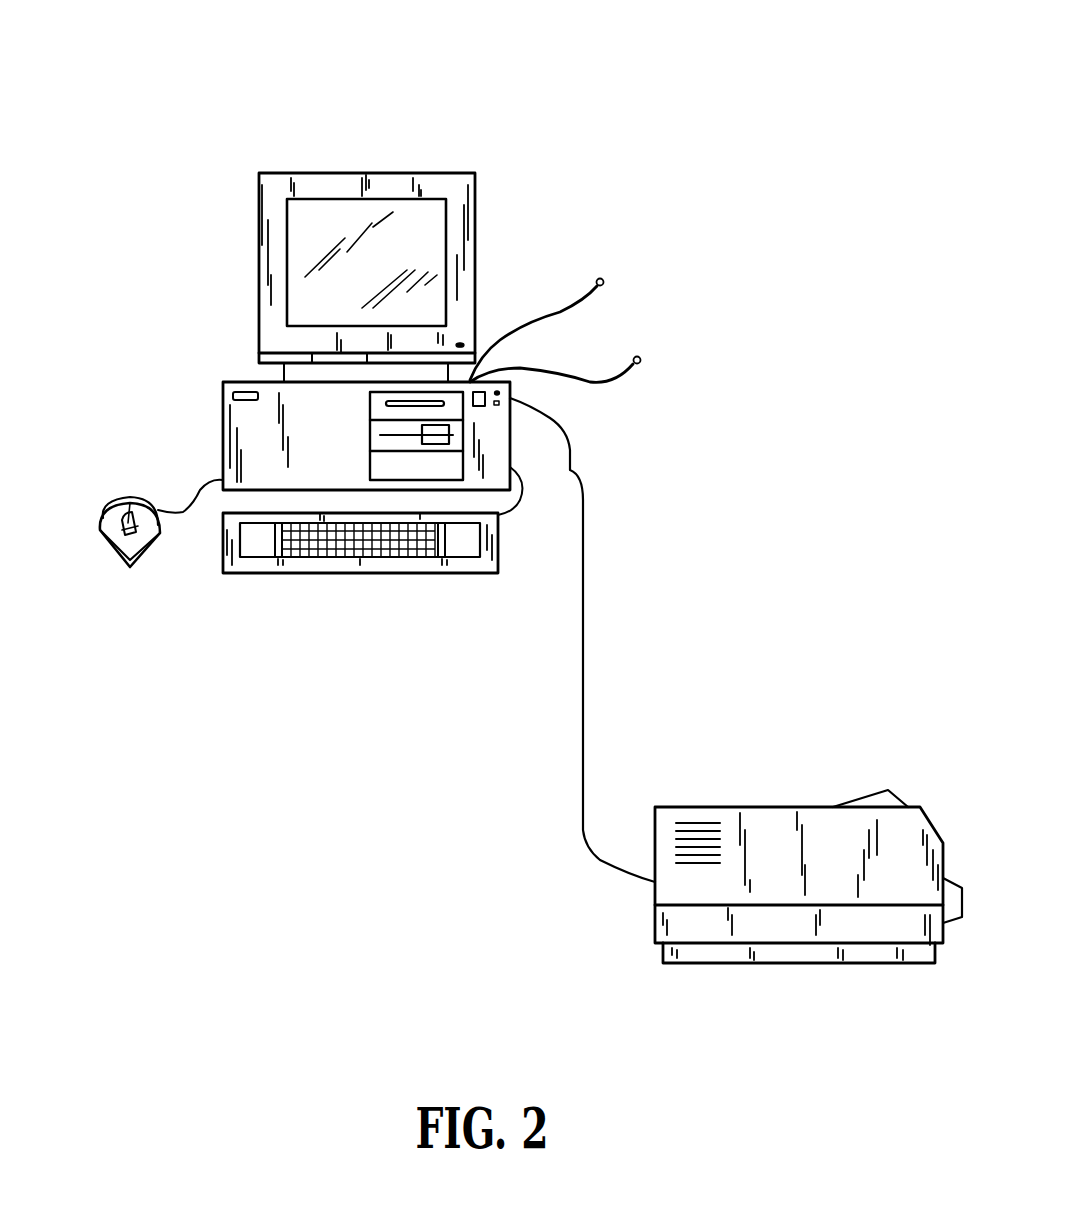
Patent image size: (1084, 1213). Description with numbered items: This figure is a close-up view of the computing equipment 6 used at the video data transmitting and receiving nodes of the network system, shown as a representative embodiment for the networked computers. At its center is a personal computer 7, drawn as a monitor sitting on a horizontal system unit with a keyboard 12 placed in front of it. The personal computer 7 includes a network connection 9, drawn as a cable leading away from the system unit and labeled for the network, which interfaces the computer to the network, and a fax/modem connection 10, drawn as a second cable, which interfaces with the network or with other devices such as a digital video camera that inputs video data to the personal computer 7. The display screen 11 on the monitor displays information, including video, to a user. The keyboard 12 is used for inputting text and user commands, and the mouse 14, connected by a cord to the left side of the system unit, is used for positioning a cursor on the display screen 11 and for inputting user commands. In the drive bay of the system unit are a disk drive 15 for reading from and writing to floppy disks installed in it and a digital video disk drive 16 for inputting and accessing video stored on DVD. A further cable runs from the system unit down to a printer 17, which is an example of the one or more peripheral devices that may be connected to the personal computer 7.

The computing equipment 6 is at (628, 123).
The personal computer 7 is at (348, 83).
The network connection 9 is at (558, 316).
The fax/modem connection 10 is at (594, 386).
The display screen 11 is at (331, 208).
The keyboard 12 is at (402, 565).
The mouse 14 is at (113, 525).
The disk drive 15 is at (372, 402).
The digital video disk drive 16 is at (372, 430).
The printer 17 is at (752, 807).